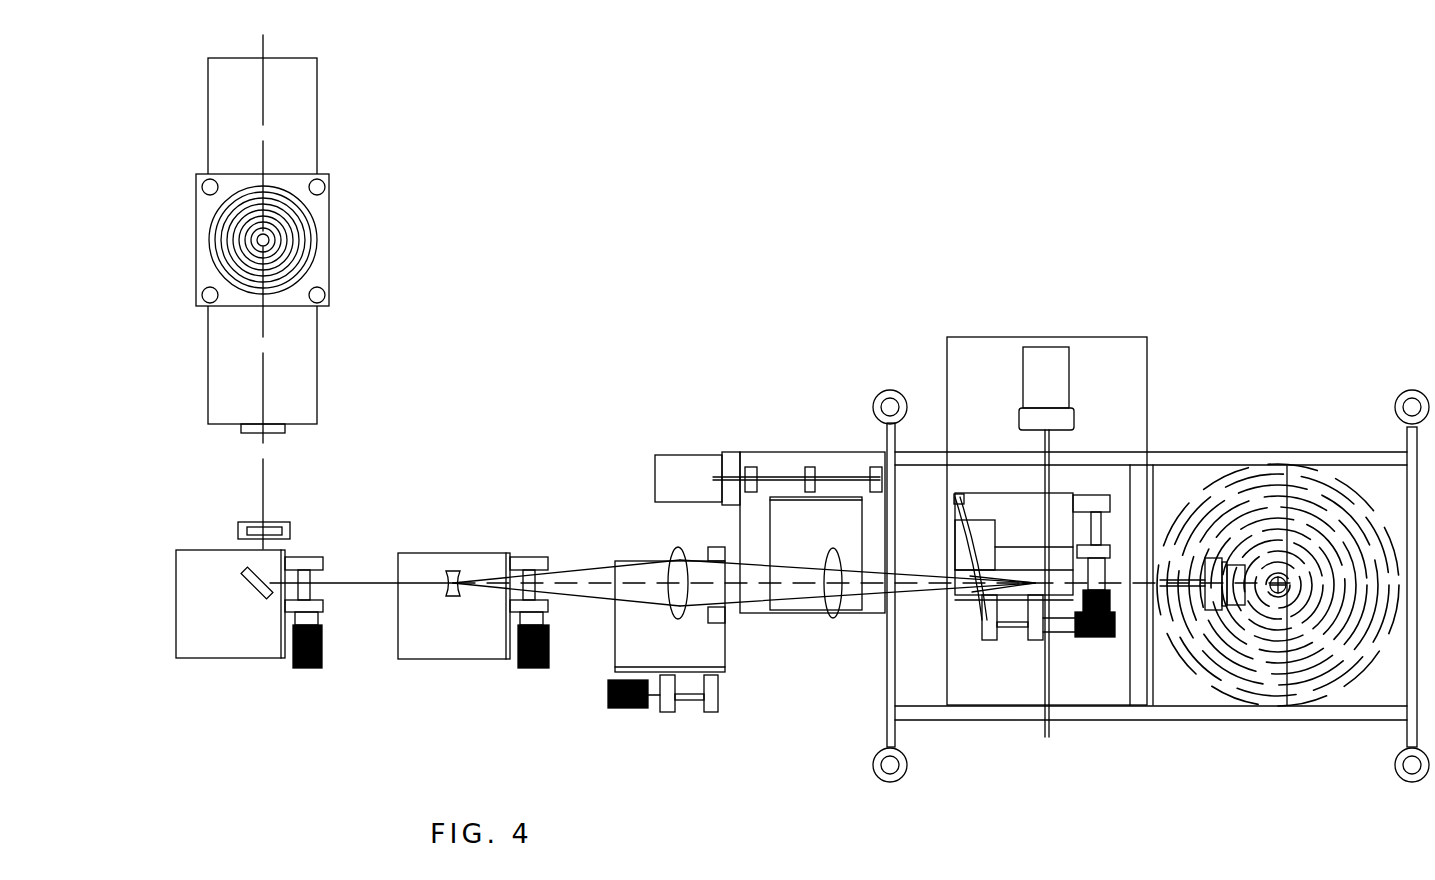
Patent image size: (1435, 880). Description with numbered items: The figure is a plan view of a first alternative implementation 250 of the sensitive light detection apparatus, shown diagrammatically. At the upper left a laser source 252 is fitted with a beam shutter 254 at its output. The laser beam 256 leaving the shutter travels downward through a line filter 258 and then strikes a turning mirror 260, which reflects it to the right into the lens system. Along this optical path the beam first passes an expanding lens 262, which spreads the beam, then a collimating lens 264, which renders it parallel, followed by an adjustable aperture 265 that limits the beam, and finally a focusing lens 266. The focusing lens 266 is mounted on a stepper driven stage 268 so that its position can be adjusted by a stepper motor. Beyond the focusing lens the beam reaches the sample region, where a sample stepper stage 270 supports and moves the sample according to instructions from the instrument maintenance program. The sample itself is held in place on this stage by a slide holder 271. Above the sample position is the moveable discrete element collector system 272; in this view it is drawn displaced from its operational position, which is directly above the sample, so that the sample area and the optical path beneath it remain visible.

The first alternative implementation 250 is at (622, 134).
The laser source 252 is at (329, 246).
The beam shutter 254 is at (283, 435).
The laser beam 256 is at (265, 495).
The line filter 258 is at (240, 526).
The turning mirror 260 is at (250, 588).
The expanding lens 262 is at (458, 570).
The collimating lens 264 is at (672, 553).
The adjustable aperture 265 is at (708, 550).
The focusing lens 266 is at (830, 604).
The stepper driven stage 268 is at (841, 478).
The sample stepper stage 270 is at (957, 527).
The slide holder 271 is at (955, 565).
The moveable discrete element collector system 272 is at (1250, 452).